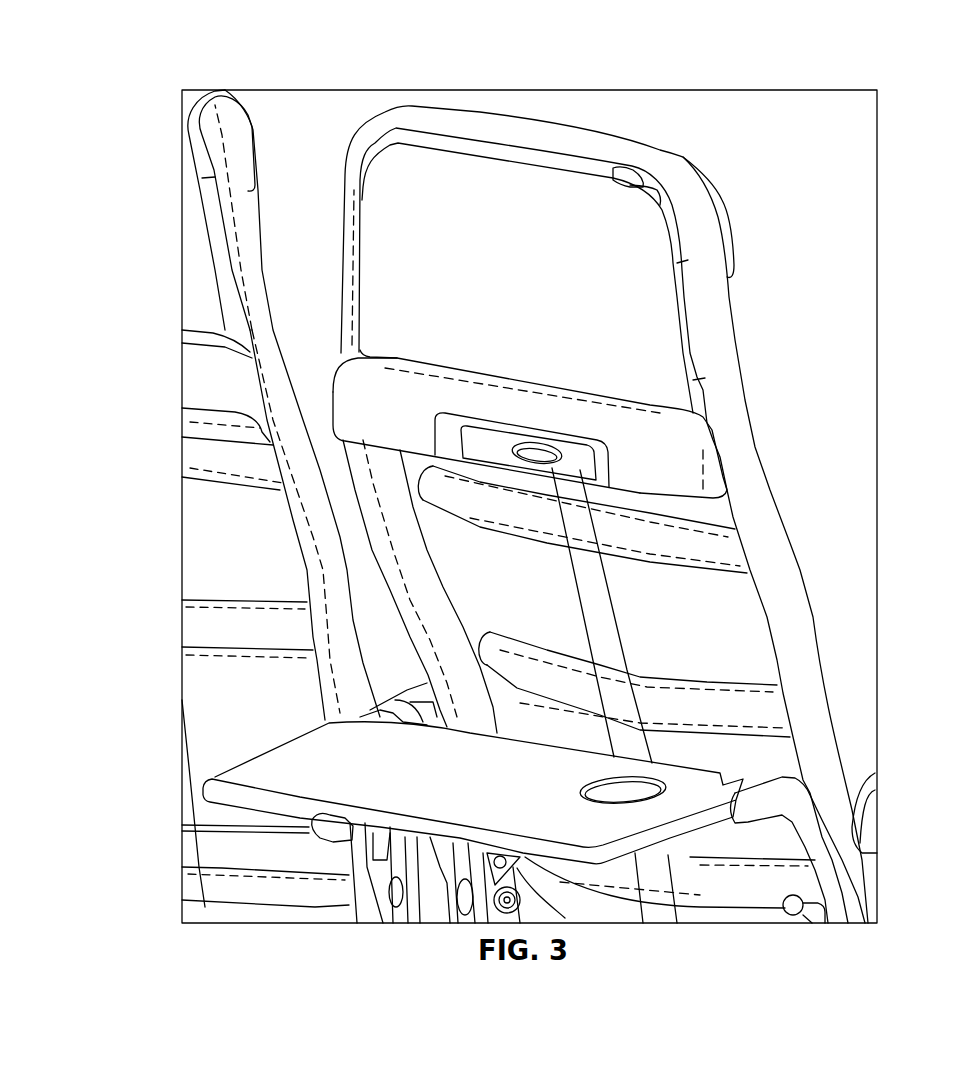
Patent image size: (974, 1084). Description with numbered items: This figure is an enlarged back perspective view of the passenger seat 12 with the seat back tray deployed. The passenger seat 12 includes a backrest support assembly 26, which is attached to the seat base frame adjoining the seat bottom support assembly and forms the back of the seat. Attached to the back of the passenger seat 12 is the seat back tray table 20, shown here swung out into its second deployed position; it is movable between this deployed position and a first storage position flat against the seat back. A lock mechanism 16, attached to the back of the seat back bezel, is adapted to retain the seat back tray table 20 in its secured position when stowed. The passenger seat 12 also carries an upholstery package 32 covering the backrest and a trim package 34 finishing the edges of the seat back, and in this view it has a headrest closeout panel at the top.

The passenger seat 12 is at (660, 93).
The lock mechanism 16 is at (545, 456).
The seat back tray table 20 is at (269, 773).
The backrest support assembly 26 is at (722, 626).
The upholstery package 32 is at (727, 337).
The trim package 34 is at (723, 217).